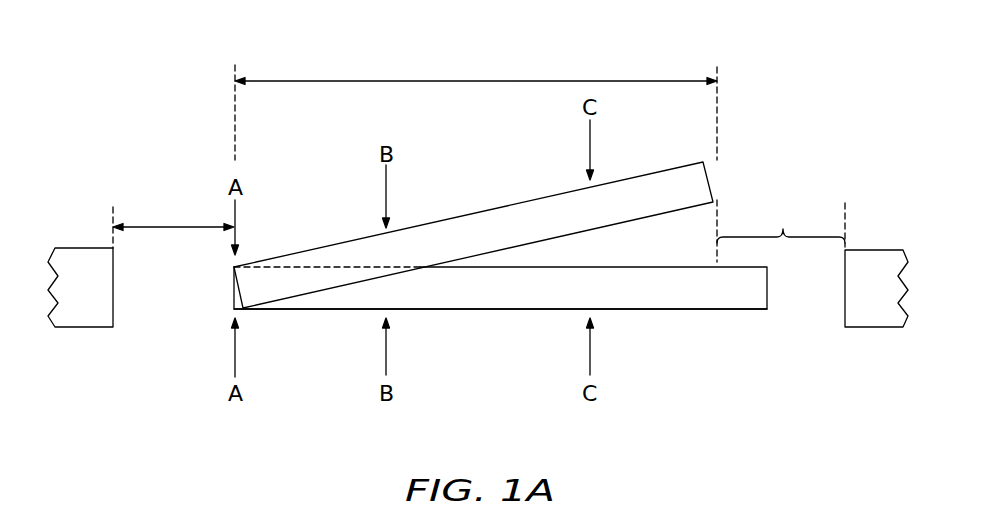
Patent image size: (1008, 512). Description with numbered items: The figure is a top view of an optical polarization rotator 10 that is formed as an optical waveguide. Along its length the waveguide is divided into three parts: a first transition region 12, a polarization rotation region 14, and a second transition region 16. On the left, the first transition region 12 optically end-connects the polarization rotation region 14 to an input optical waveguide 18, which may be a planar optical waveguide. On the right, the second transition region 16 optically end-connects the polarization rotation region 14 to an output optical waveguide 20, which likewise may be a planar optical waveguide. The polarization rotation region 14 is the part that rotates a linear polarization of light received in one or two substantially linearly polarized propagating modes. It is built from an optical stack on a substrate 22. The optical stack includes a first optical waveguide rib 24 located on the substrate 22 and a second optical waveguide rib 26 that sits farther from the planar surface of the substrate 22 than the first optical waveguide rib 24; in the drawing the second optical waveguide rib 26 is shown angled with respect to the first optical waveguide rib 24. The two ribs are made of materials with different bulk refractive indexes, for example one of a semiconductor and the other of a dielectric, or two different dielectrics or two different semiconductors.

The optical polarization rotator 10 is at (194, 80).
The first transition region 12 is at (175, 226).
The polarization rotation region 14 is at (478, 80).
The second transition region 16 is at (783, 229).
The input optical waveguide 18 is at (97, 302).
The output optical waveguide 20 is at (887, 302).
The substrate 22 is at (501, 404).
The first optical waveguide rib 24 is at (675, 302).
The second optical waveguide rib 26 is at (526, 235).